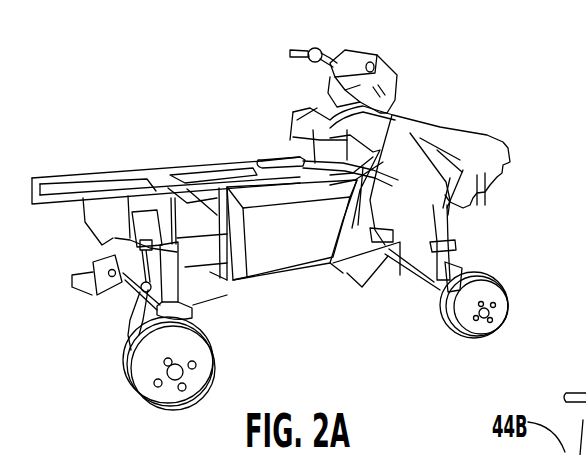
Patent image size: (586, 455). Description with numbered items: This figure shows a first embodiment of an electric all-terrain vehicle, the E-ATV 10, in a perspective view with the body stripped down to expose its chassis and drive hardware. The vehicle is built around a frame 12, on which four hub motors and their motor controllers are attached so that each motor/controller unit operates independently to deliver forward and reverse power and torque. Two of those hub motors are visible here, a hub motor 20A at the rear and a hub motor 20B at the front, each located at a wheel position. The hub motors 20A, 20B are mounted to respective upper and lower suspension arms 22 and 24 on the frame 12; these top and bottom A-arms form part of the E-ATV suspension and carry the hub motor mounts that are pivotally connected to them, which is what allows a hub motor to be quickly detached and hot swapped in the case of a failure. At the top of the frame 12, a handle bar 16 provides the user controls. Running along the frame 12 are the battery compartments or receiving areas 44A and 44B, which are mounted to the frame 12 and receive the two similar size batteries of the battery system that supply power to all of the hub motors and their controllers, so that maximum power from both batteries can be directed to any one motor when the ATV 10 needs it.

The E-ATV 10 is at (493, 107).
The frame 12 is at (233, 163).
The handle bar 16 is at (323, 48).
The hub motor 20A is at (508, 298).
The hub motor 20B is at (202, 372).
The upper suspension arm 22 is at (130, 301).
The lower suspension arm 24 is at (123, 330).
The battery compartment 44A is at (183, 175).
The battery compartment 44B is at (96, 185).